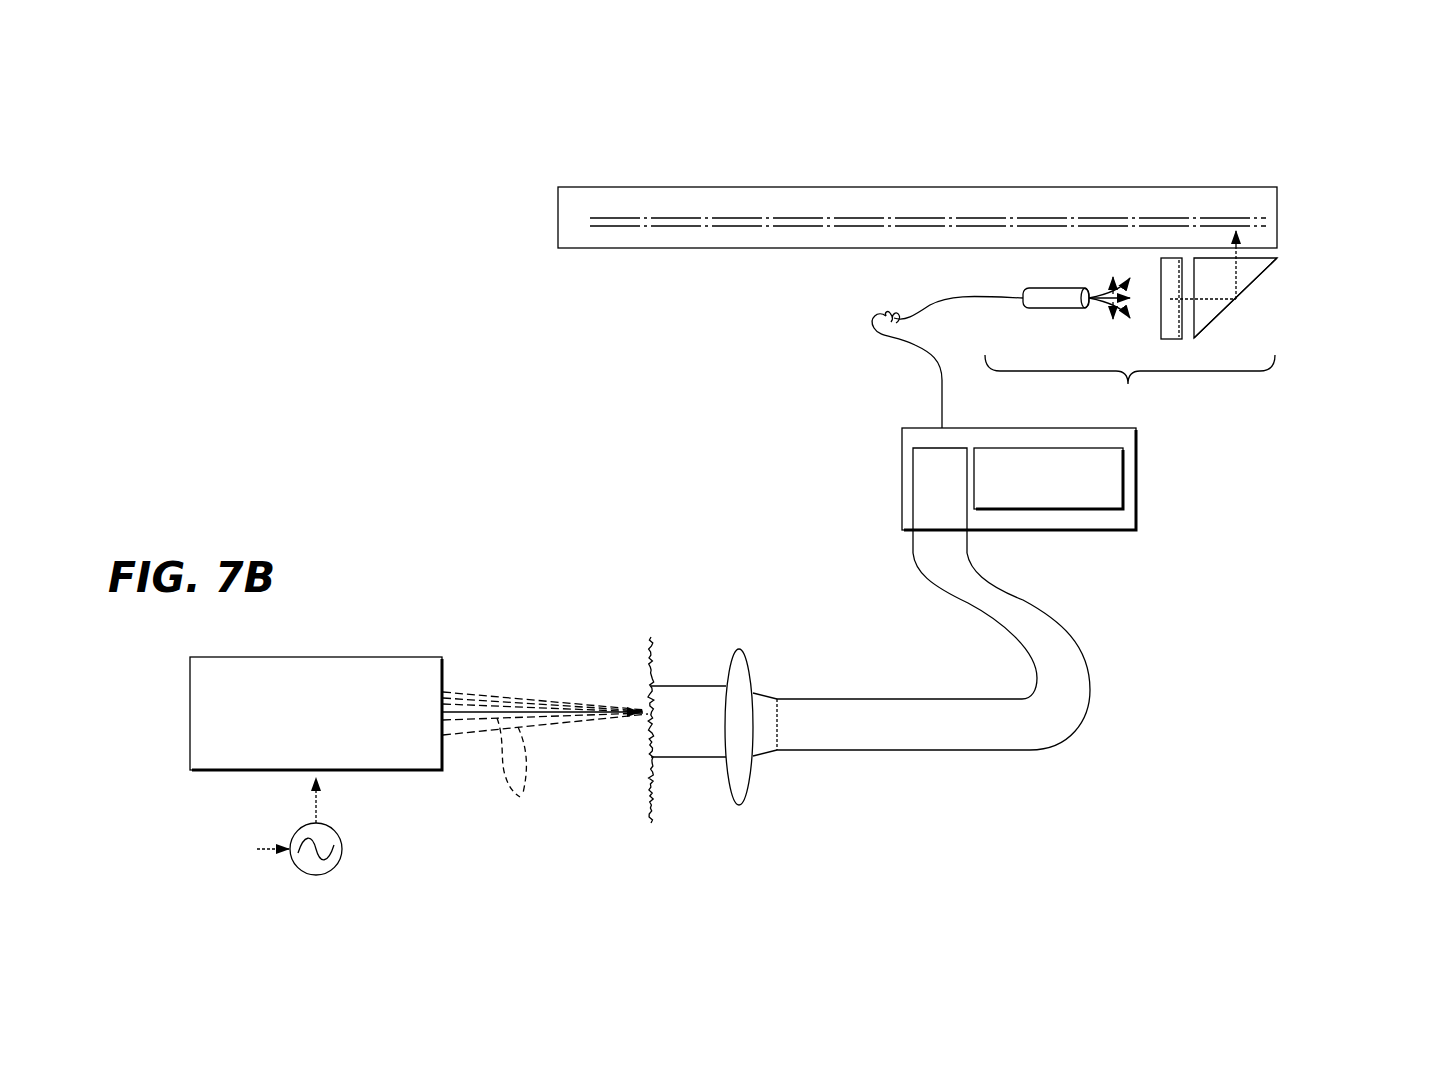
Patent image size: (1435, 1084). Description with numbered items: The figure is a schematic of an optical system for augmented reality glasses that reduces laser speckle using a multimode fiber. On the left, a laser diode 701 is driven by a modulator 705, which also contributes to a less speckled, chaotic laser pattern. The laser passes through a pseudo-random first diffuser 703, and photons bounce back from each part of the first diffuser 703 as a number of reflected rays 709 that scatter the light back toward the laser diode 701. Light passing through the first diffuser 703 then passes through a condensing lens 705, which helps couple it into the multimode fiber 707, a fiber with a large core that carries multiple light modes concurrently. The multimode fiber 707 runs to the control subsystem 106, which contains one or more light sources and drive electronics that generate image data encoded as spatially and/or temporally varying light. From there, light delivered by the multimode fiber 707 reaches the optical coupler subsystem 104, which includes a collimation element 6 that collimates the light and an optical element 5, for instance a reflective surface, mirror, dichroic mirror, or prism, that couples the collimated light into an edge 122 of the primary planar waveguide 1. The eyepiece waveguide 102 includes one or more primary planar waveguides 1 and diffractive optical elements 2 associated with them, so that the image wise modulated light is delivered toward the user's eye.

The primary planar waveguide 1 is at (1263, 187).
The diffractive optical element 2 is at (1257, 218).
The eyepiece waveguide 102 is at (1322, 167).
The edge 122 is at (1268, 260).
The optical element 5 is at (1238, 300).
The collimation element 6 is at (1170, 340).
The optical coupler subsystem 104 is at (1073, 352).
The control subsystem 106 is at (1137, 480).
The multimode fiber 707 is at (978, 738).
The first diffuser 703 is at (644, 636).
The laser diode 701 is at (297, 756).
The modulator 705 is at (765, 805).
The reflected rays 709 is at (518, 801).